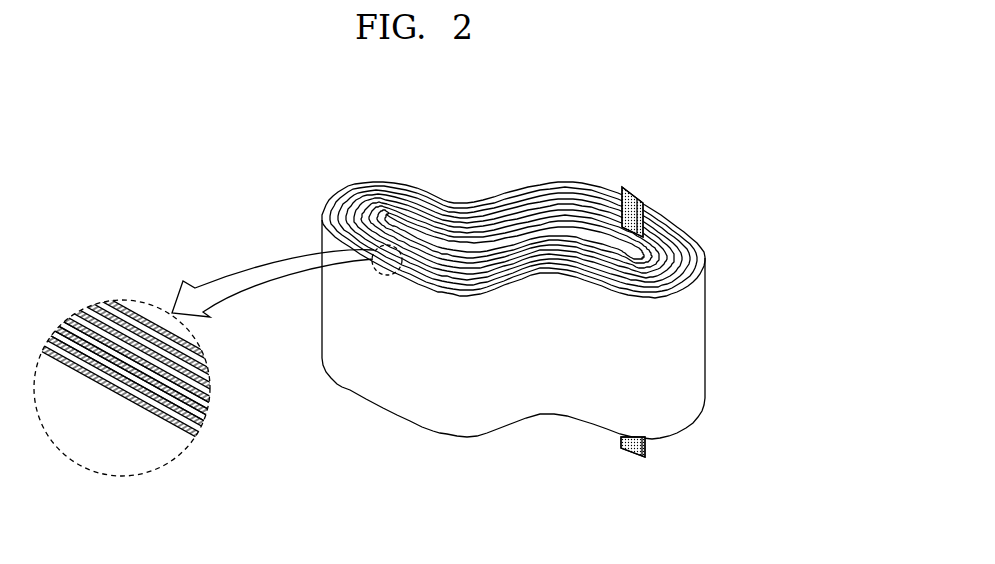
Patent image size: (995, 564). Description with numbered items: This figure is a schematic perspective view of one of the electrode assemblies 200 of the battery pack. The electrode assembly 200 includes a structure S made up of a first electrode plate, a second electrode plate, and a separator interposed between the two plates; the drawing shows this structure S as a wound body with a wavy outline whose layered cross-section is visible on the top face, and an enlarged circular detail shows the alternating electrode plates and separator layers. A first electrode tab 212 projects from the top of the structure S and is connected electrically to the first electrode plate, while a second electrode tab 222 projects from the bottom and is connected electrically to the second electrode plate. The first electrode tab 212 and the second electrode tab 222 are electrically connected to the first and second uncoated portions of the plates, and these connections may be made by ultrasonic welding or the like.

The electrode assembly 200 is at (561, 292).
The first electrode tab 212 is at (643, 202).
The second electrode tab 222 is at (635, 456).
The structure S is at (722, 330).